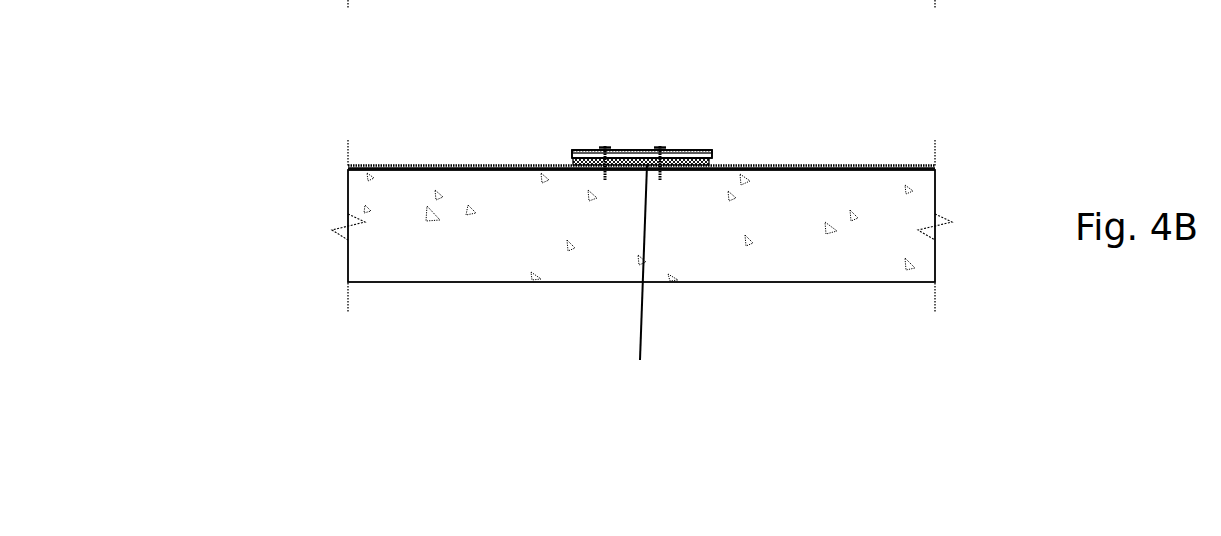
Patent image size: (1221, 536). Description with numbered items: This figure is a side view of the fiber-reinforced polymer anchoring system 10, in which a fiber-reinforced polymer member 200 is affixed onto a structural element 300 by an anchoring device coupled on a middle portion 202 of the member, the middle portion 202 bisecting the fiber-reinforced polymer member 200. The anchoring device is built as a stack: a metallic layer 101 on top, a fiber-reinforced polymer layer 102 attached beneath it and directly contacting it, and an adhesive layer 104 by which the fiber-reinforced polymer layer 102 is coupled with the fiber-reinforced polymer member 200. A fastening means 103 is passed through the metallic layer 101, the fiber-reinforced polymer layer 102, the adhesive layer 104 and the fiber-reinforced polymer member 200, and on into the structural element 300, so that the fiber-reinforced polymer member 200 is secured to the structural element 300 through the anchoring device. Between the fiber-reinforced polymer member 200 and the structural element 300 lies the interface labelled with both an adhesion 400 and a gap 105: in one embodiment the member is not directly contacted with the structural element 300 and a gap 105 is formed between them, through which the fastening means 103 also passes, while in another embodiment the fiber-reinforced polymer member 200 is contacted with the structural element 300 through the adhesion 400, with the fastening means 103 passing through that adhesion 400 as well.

The fiber-reinforced polymer anchoring system 10 is at (315, 151).
The metallic layer 101 is at (638, 148).
The fiber-reinforced polymer layer 102 is at (682, 153).
The fastening means 103 is at (605, 145).
The adhesive layer 104 is at (715, 160).
The gap 105 is at (782, 132).
The fiber-reinforced polymer member 200 is at (500, 163).
The middle portion 202 is at (644, 292).
The structural element 300 is at (900, 192).
The adhesion 400 is at (937, 166).